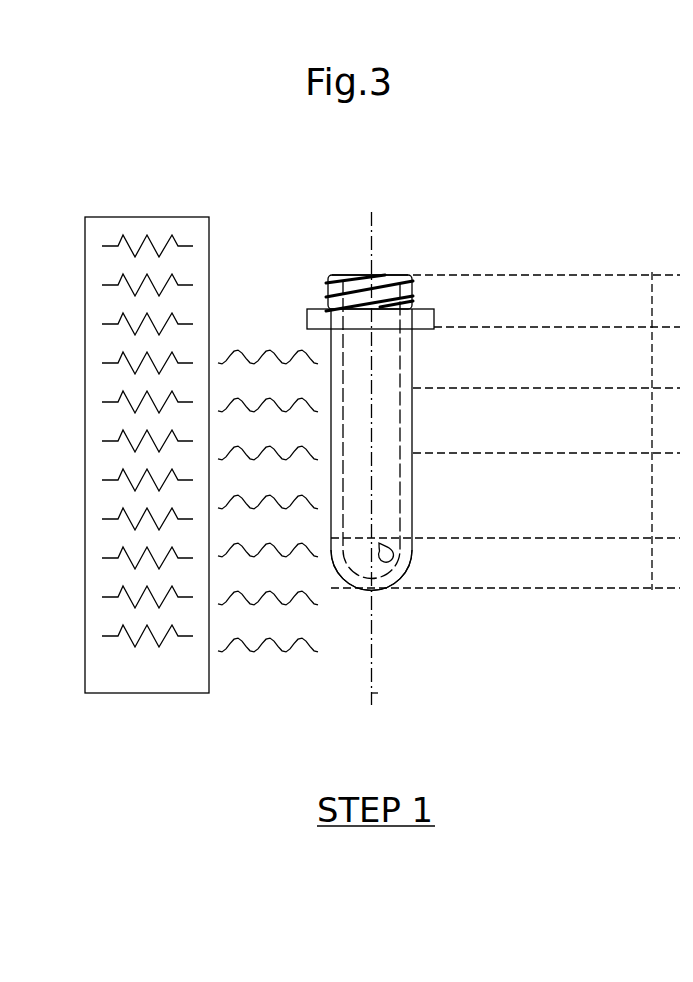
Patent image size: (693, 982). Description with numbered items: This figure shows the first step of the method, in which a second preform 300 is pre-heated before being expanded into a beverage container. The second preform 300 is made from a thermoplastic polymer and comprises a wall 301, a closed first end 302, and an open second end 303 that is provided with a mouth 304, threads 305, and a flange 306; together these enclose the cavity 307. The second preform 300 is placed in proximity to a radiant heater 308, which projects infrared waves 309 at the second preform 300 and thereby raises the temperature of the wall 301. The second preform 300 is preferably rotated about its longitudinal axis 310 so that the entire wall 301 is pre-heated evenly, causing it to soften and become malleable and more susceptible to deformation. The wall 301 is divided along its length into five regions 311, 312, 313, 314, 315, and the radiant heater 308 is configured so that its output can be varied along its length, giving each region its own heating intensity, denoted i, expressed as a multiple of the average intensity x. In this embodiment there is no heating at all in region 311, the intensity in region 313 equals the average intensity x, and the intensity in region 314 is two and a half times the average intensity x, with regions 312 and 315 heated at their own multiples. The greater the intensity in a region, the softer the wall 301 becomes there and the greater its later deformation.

The second preform 300 is at (327, 352).
The wall 301 is at (408, 560).
The closed first end 302 is at (345, 588).
The open second end 303 is at (337, 269).
The mouth 304 is at (389, 269).
The threads 305 is at (422, 289).
The flange 306 is at (316, 302).
The cavity 307 is at (384, 566).
The radiant heater 308 is at (137, 208).
The infrared waves 309 is at (281, 656).
The longitudinal axis 310 is at (379, 694).
The region 311 is at (546, 295).
The region 312 is at (557, 350).
The region 313 is at (546, 412).
The region 314 is at (546, 482).
The region 315 is at (505, 559).